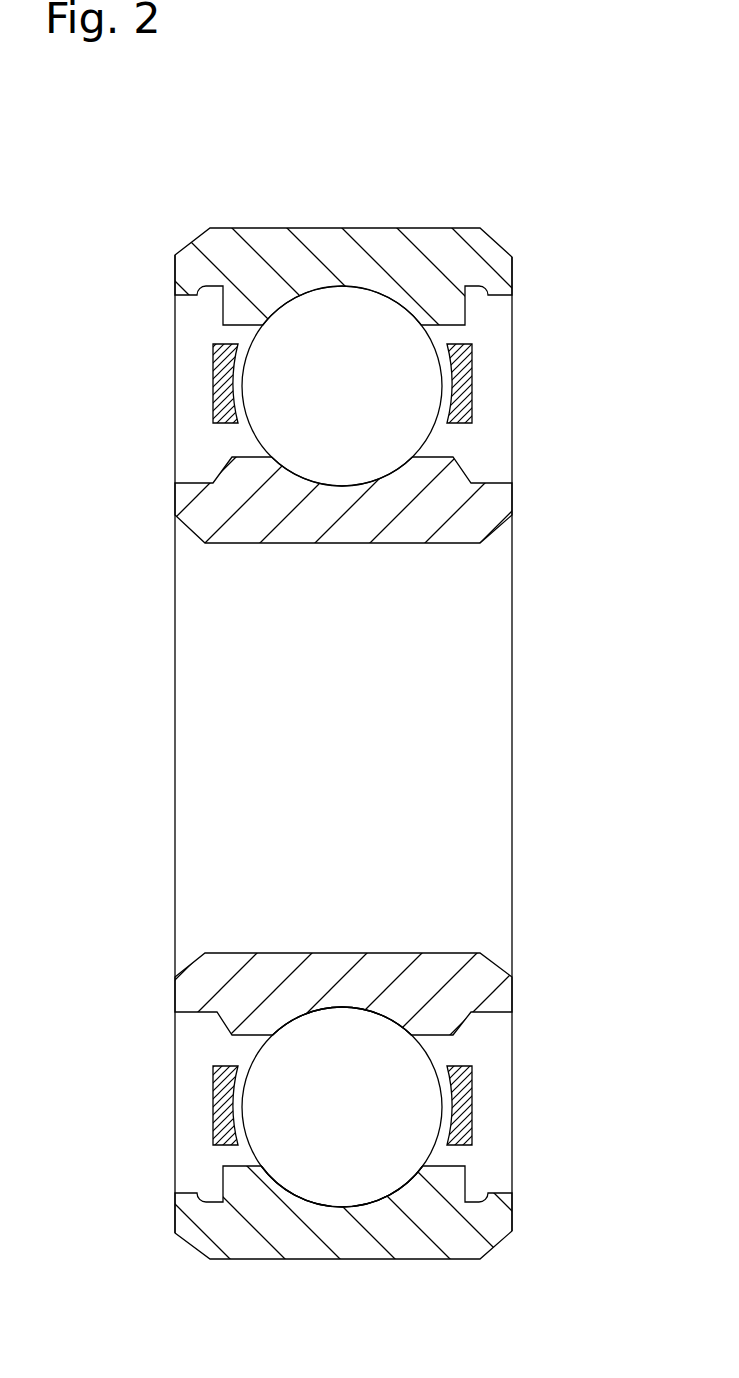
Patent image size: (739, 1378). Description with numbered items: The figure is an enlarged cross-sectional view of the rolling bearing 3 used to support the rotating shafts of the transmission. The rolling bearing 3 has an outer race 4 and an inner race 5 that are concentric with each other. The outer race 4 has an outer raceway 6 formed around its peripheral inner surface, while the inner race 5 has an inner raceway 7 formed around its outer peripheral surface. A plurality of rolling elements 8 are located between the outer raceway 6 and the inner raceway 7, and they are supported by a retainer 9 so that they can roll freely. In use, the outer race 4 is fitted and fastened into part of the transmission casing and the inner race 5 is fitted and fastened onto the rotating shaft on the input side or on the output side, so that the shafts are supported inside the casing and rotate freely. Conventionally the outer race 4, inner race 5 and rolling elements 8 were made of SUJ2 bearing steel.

The rolling bearing 3 is at (355, 709).
The outer race 4 is at (473, 1233).
The inner race 5 is at (220, 983).
The outer raceway 6 is at (378, 1198).
The inner raceway 7 is at (345, 1010).
The rolling element 8 is at (354, 333).
The retainer 9 is at (475, 376).